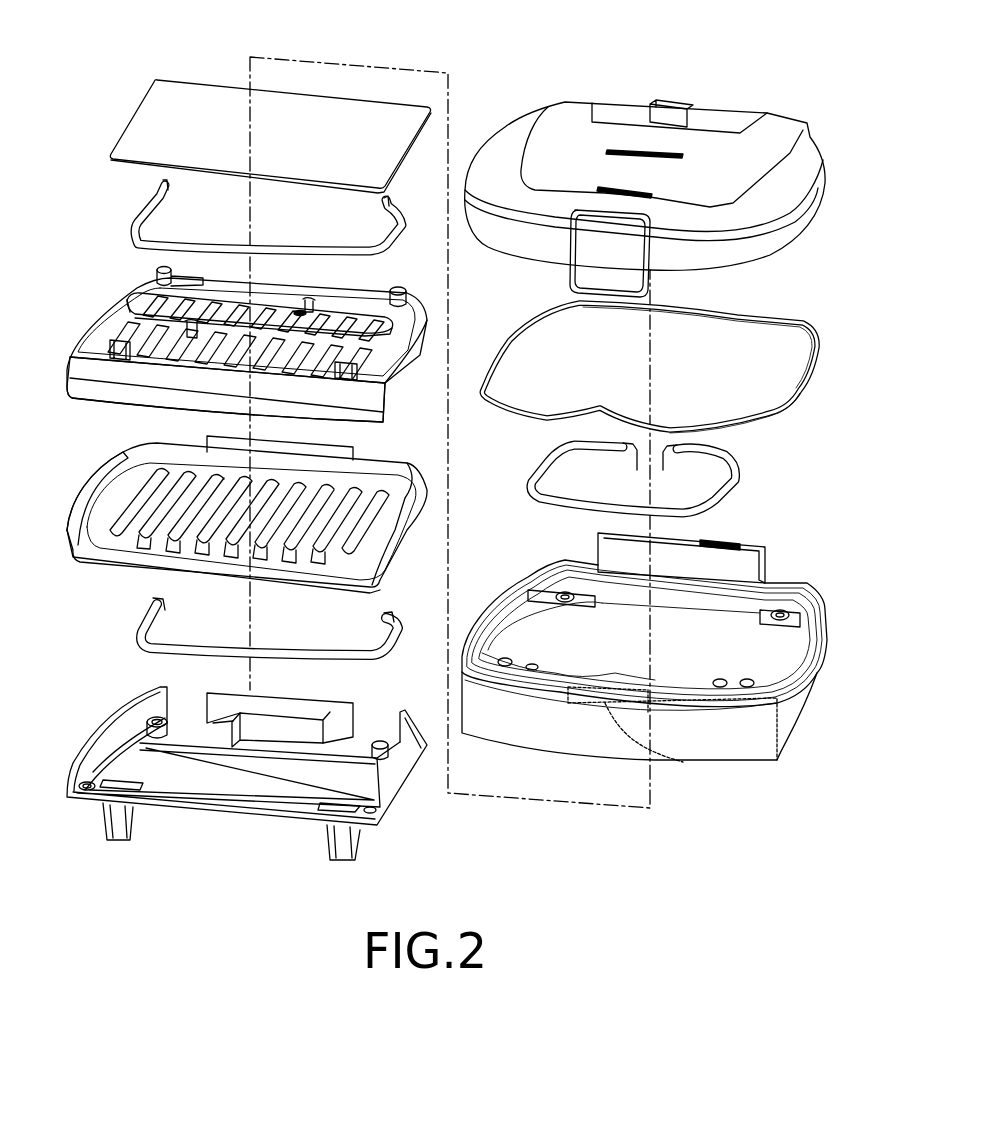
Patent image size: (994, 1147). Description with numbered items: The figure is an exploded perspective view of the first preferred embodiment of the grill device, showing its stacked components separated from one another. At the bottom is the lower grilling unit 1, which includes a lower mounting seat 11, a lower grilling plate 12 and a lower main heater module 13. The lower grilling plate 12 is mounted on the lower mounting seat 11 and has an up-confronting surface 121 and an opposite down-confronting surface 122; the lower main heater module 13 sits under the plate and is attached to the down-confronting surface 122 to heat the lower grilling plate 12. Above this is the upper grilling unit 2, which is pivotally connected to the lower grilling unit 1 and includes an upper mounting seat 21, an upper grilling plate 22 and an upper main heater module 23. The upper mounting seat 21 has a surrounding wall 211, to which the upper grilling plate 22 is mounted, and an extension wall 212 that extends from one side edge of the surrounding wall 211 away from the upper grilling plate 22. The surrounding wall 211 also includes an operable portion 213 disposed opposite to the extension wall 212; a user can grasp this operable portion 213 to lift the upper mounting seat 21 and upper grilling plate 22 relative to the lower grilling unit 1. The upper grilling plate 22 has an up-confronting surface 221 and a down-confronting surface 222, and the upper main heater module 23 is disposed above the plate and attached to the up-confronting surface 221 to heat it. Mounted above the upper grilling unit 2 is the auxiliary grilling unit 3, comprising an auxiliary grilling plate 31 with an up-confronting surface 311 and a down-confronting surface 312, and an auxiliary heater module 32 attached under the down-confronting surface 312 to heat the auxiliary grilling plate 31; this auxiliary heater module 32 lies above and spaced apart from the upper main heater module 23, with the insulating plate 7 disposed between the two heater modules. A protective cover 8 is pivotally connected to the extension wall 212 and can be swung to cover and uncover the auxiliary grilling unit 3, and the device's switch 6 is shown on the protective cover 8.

The lower grilling unit 1 is at (97, 462).
The lower mounting seat 11 is at (108, 728).
The lower grilling plate 12 is at (83, 527).
The up-confronting surface 121 is at (138, 555).
The down-confronting surface 122 is at (108, 538).
The lower main heater module 13 is at (150, 645).
The upper grilling unit 2 is at (107, 192).
The upper grilling plate 22 is at (108, 318).
The up-confronting surface 221 is at (98, 331).
The down-confronting surface 222 is at (90, 342).
The upper main heater module 23 is at (148, 236).
The insulating plate 7 is at (180, 95).
The protective cover 8 is at (790, 110).
The switch 6 is at (676, 104).
The auxiliary grilling unit 3 is at (765, 301).
The auxiliary grilling plate 31 is at (807, 382).
The up-confronting surface 311 is at (770, 350).
The down-confronting surface 312 is at (758, 423).
The auxiliary heater module 32 is at (722, 487).
The upper mounting seat 21 is at (745, 762).
The surrounding wall 211 is at (762, 732).
The extension wall 212 is at (765, 565).
The operable portion 213 is at (603, 707).